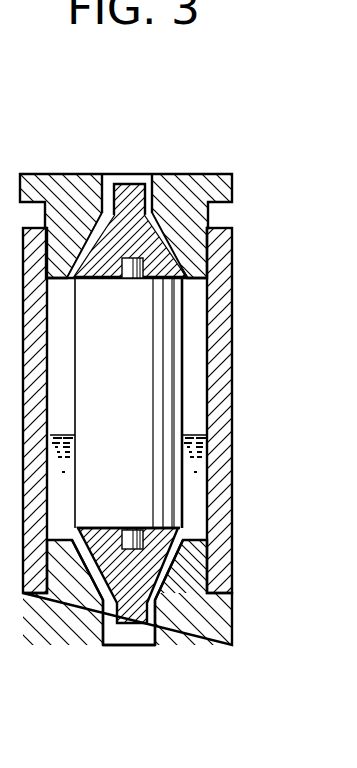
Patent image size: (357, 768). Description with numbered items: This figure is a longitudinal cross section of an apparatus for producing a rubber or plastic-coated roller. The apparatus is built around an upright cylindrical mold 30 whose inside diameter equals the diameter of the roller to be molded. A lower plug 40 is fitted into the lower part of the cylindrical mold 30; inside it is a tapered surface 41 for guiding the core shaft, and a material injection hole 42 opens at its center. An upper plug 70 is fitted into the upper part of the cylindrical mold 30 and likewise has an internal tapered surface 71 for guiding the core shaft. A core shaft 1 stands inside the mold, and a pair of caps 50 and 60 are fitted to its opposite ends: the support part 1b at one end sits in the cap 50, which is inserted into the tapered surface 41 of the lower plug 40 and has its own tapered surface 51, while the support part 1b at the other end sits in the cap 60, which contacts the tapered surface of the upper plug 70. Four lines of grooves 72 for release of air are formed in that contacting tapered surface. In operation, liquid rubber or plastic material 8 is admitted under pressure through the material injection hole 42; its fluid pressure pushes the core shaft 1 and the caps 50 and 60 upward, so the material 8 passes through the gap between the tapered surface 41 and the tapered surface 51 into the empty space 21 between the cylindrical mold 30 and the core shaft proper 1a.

The core shaft 1 is at (219, 393).
The core shaft proper 1a is at (158, 307).
The support part 1b is at (143, 266).
The liquid rubber or plastic material 8 is at (185, 503).
The empty space 21 is at (183, 378).
The cylindrical mold 30 is at (220, 430).
The lower plug 40 is at (207, 620).
The tapered surface 41 is at (168, 575).
The material injection hole 42 is at (128, 643).
The cap 50 is at (167, 534).
The tapered surface 51 is at (182, 553).
The cap 60 is at (127, 190).
The upper plug 70 is at (187, 216).
The tapered surface 71 is at (97, 238).
The grooves 72 is at (167, 223).